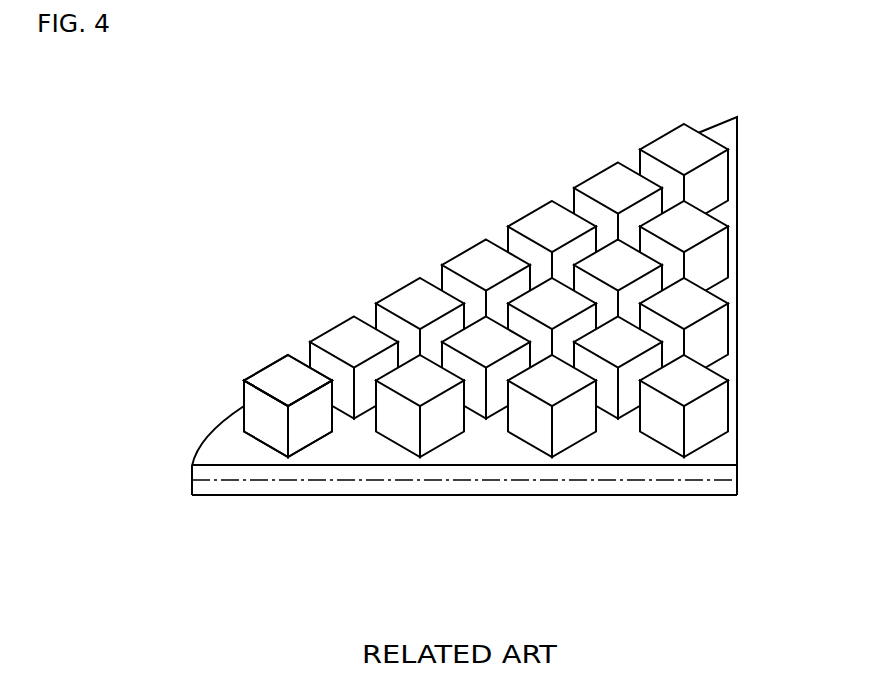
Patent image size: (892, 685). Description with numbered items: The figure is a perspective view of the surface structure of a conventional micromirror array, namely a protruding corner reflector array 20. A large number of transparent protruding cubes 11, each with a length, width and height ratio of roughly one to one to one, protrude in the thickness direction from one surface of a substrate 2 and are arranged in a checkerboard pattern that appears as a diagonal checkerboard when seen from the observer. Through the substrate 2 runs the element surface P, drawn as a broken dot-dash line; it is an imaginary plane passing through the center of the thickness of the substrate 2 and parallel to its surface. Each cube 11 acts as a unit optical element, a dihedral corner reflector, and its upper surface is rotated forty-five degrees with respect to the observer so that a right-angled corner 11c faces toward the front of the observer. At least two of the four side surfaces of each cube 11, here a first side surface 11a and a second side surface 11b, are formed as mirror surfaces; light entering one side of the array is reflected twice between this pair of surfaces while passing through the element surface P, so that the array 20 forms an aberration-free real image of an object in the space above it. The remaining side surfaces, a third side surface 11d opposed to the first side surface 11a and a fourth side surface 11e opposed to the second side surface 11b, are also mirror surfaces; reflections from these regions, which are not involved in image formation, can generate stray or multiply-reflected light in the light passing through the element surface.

The transparent protruding cube 11 is at (415, 300).
The first side surface 11a is at (263, 420).
The second side surface 11b is at (309, 423).
The corner 11c is at (287, 430).
The third side surface 11d is at (300, 378).
The fourth side surface 11e is at (273, 388).
The substrate 2 is at (486, 495).
The element surface P is at (587, 480).
The protruding corner reflector array 20 is at (697, 500).